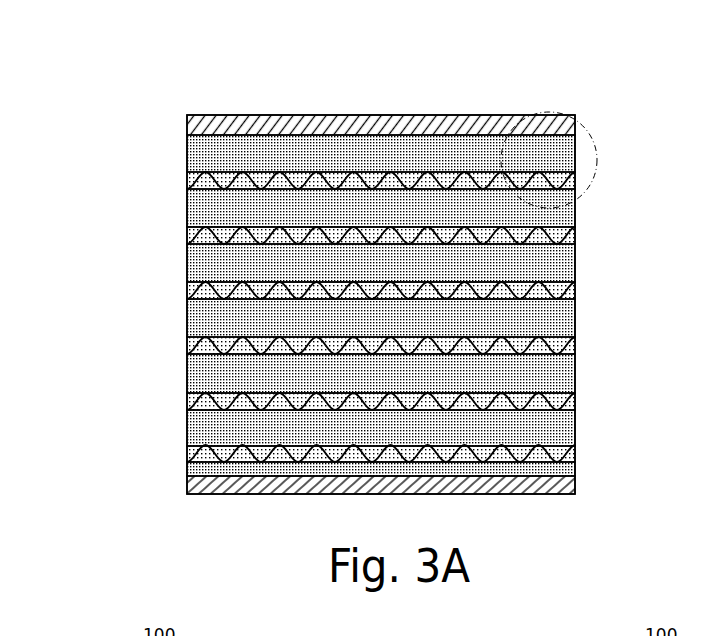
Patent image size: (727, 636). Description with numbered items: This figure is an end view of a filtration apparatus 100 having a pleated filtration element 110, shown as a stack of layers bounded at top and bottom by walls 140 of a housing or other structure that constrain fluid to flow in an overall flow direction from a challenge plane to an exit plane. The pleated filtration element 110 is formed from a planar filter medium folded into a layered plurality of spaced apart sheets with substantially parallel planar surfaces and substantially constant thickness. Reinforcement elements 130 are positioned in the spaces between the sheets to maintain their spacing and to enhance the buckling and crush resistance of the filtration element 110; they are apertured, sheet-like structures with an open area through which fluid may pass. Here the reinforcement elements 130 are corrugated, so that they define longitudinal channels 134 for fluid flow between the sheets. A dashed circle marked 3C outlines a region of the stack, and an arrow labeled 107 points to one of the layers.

The filtration apparatus 100 is at (127, 372).
The layer 107 is at (562, 431).
The pleated filtration element 110 is at (187, 153).
The reinforcement element 130 is at (187, 218).
The longitudinal channel 134 is at (302, 175).
The wall 140 is at (443, 115).
The detail view region 3C is at (588, 143).